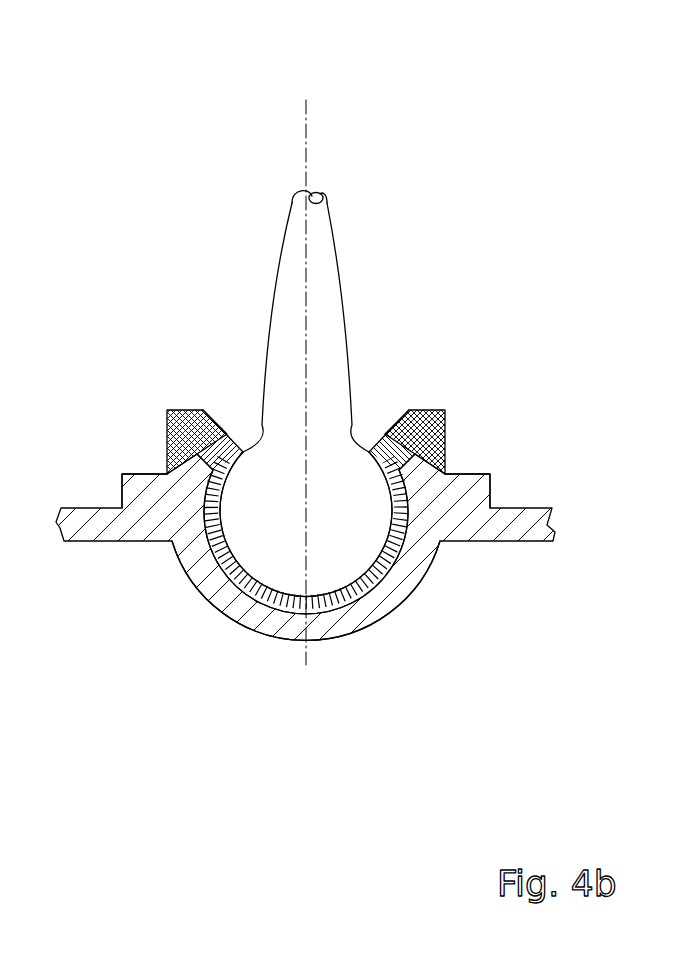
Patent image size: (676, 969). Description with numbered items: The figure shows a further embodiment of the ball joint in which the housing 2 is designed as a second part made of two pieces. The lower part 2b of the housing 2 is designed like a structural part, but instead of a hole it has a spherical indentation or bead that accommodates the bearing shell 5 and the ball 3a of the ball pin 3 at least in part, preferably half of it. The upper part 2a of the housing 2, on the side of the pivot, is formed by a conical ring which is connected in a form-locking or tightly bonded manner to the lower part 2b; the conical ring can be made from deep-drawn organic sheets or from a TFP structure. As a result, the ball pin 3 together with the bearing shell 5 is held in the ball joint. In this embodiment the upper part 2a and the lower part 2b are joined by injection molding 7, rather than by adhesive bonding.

The housing 2 is at (527, 467).
The upper part of the housing 2a is at (473, 474).
The lower part of the housing 2b is at (328, 624).
The ball pin 3 is at (285, 353).
The ball 3a is at (280, 537).
The bearing shell 5 is at (214, 535).
The injection molding 7 is at (168, 470).